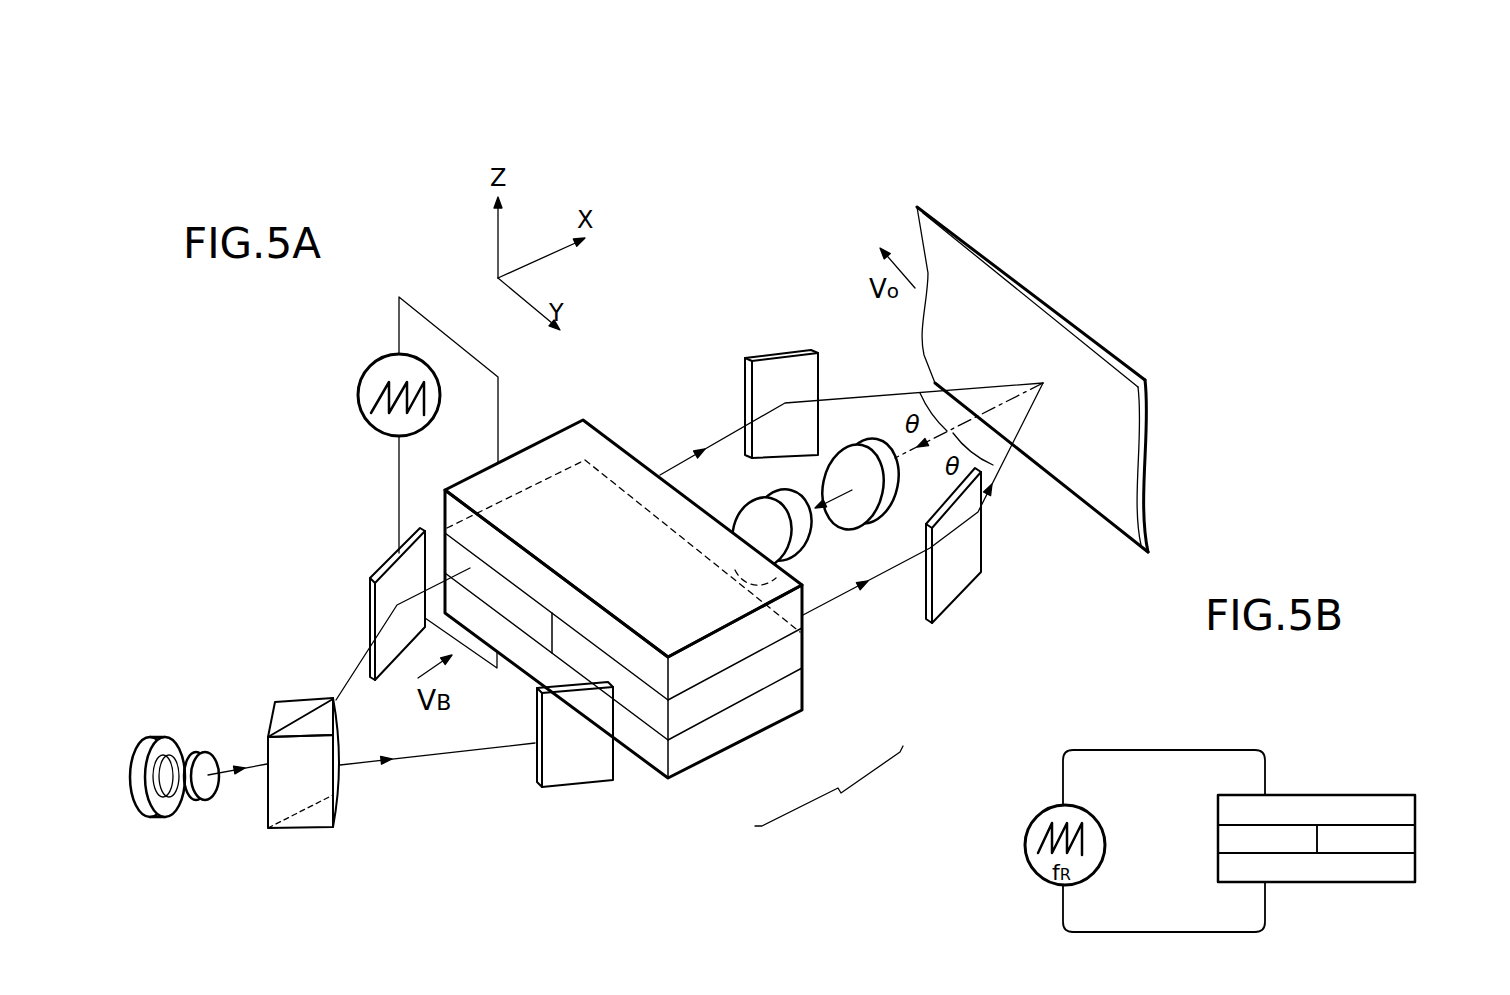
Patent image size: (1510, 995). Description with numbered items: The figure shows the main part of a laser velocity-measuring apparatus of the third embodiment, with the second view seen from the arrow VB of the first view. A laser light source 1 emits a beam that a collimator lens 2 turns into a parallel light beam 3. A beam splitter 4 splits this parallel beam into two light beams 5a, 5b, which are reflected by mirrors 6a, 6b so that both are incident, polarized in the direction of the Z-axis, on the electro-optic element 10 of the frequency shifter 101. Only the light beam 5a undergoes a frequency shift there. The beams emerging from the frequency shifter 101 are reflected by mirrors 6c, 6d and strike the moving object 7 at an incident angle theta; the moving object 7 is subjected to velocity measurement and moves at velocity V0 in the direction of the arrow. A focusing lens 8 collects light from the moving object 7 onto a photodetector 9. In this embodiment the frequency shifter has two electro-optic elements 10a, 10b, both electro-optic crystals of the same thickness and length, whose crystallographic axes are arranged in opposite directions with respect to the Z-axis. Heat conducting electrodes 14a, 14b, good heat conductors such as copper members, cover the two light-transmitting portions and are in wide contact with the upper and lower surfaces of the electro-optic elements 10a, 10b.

In FIG. 5A, the laser light source 1 is at (165, 738).
In FIG. 5A, the collimator lens 2 is at (207, 795).
In FIG. 5A, the parallel light beam 3 is at (236, 765).
In FIG. 5A, the beam splitter 4 is at (296, 712).
In FIG. 5A, the light beam 5a is at (360, 665).
In FIG. 5A, the light beam 5b is at (448, 753).
In FIG. 5A, the mirror 6a is at (392, 560).
In FIG. 5A, the mirror 6b is at (578, 777).
In FIG. 5A, the mirror 6c is at (777, 372).
In FIG. 5A, the mirror 6d is at (960, 555).
In FIG. 5A, the moving object 7 is at (1003, 297).
In FIG. 5A, the focusing lens 8 is at (864, 508).
In FIG. 5A, the photodetector 9 is at (748, 517).
In FIG. 5A, the electro-optic element 10 is at (733, 693).
In FIG. 5B, the electro-optic element 10a is at (1230, 836).
In FIG. 5B, the electro-optic element 10b is at (1405, 837).
In FIG. 5A, the heat conducting electrode 14a is at (768, 631).
In FIG. 5B, the heat conducting electrode 14a is at (1227, 803).
In FIG. 5A, the heat conducting electrode 14b is at (713, 740).
In FIG. 5B, the heat conducting electrode 14b is at (1228, 866).
In FIG. 5A, the frequency shifter 101 is at (829, 789).